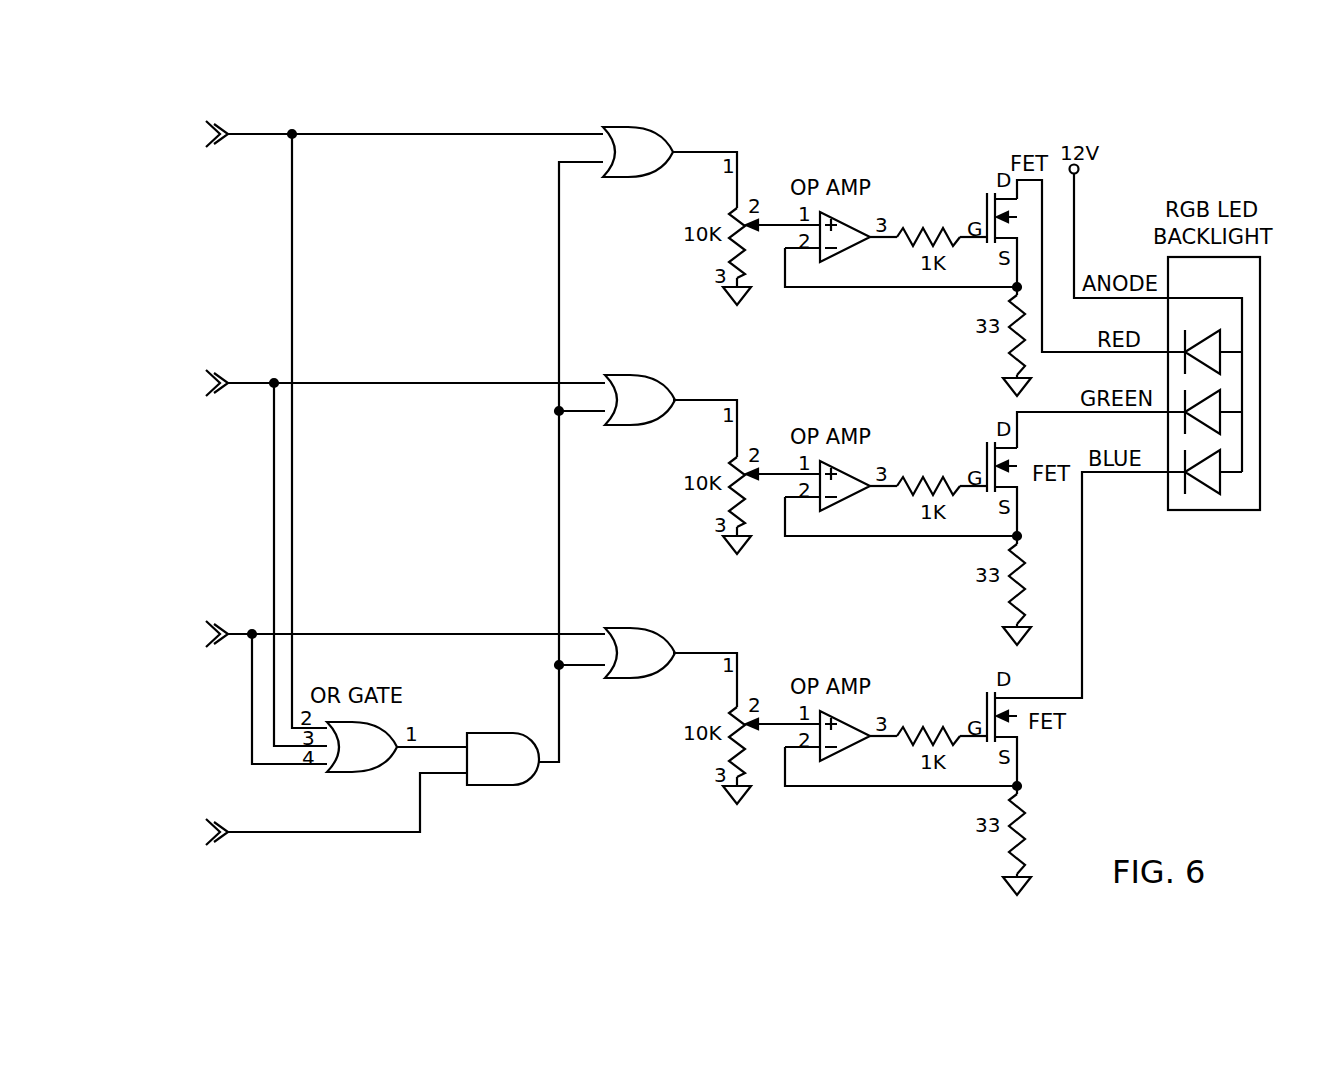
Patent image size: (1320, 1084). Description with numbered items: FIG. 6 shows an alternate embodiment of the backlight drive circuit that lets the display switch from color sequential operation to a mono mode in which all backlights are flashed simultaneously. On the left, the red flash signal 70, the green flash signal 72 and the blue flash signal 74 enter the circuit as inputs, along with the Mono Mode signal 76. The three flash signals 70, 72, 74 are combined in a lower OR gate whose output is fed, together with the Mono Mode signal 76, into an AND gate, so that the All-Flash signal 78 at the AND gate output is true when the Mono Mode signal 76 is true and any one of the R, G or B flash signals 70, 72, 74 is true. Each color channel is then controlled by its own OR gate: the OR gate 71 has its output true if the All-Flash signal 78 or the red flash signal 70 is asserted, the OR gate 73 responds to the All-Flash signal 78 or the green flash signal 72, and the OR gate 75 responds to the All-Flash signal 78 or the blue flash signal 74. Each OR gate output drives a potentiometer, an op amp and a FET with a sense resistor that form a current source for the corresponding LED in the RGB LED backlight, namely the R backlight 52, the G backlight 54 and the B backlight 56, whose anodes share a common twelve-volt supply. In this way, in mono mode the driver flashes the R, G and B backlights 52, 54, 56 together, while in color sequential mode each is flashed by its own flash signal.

The red flash signal 70 is at (165, 160).
The green flash signal 72 is at (165, 407).
The blue flash signal 74 is at (165, 665).
The Mono Mode signal 76 is at (217, 851).
The All-Flash signal 78 is at (603, 806).
The OR gate 71 is at (643, 175).
The OR gate 73 is at (643, 423).
The OR gate 75 is at (643, 678).
The R backlight 52 is at (1222, 346).
The G backlight 54 is at (1222, 406).
The B backlight 56 is at (1222, 466).